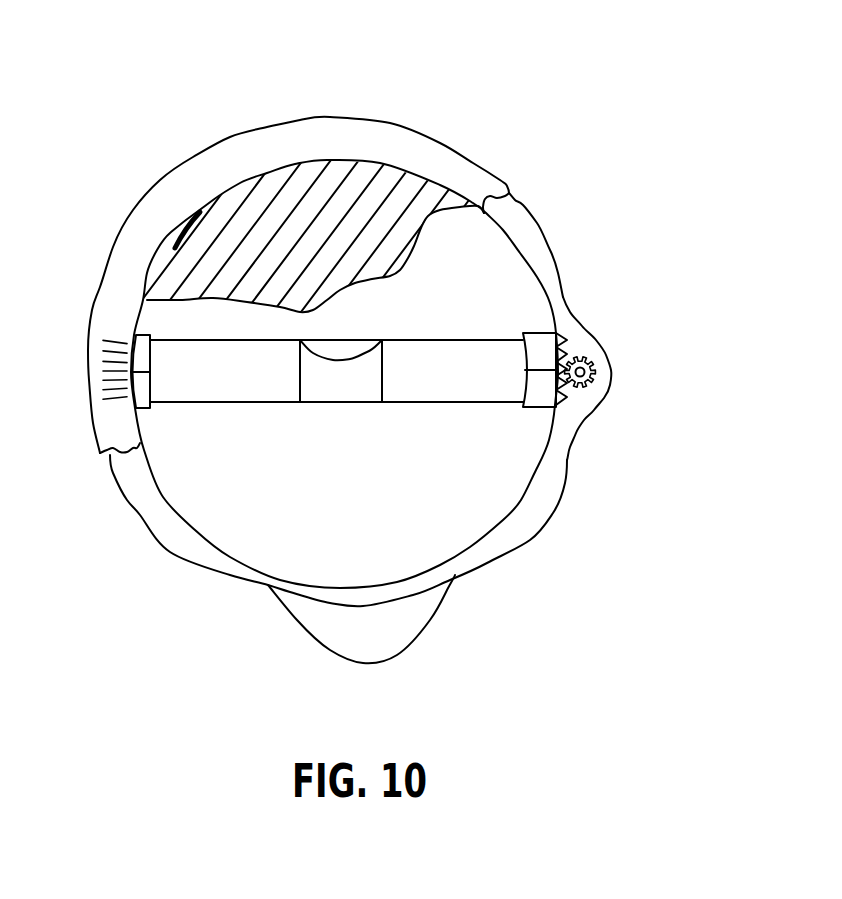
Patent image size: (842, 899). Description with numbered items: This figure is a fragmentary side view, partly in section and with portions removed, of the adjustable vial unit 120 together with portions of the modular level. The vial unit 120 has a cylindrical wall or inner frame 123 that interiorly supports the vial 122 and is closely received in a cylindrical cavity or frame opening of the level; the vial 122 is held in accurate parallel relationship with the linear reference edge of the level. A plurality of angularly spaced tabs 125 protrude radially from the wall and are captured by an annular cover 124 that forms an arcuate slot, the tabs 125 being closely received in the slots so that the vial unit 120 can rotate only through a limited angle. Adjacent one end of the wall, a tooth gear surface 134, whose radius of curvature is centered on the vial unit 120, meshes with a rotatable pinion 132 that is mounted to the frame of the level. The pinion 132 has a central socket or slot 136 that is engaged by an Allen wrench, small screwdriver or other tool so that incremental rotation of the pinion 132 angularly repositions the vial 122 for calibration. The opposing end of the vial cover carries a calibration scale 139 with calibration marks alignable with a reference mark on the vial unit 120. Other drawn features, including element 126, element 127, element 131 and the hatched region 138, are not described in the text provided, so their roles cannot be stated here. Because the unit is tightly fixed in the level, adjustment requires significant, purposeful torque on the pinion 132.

The adjustable vial unit 120 is at (370, 377).
The vial 122 is at (376, 349).
The inner frame 123 is at (533, 478).
The annular cover 124 is at (460, 180).
The tabs 125 is at (517, 223).
The slide block 126 is at (367, 357).
The stop 127 is at (298, 382).
The housing bump 131 is at (590, 382).
The pinion 132 is at (586, 365).
The tooth gear surface 134 is at (562, 365).
The central socket or slot 136 is at (590, 368).
The hatched weight 138 is at (387, 193).
The calibration scale 139 is at (113, 403).